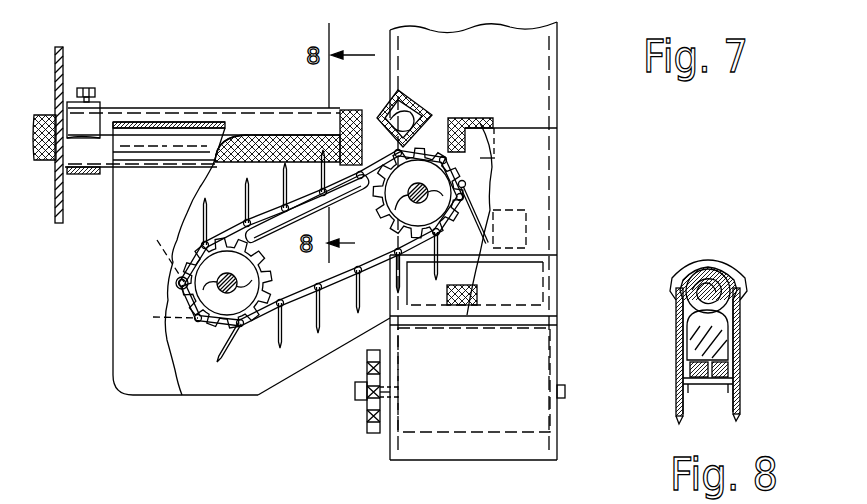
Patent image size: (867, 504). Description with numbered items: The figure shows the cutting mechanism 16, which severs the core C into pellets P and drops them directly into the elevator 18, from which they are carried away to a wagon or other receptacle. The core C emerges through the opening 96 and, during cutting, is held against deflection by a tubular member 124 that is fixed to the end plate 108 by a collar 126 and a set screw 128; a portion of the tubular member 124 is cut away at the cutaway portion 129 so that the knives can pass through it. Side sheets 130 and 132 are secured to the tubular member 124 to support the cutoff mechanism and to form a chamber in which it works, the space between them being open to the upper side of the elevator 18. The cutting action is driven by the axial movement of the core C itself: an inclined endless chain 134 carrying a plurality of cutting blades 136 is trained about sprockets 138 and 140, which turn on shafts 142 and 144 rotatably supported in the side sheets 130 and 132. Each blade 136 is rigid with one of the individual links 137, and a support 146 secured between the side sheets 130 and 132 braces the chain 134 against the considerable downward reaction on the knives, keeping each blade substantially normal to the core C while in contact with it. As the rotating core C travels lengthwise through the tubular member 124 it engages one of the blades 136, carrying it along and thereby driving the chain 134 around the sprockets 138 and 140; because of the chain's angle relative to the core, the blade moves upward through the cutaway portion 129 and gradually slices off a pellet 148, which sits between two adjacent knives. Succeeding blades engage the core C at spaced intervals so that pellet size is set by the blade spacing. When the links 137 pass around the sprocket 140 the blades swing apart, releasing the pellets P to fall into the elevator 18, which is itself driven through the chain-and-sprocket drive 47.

In FIG. 7, the end plate 108 is at (64, 68).
In FIG. 7, the opening 96 is at (50, 163).
In FIG. 7, the tubular member 124 is at (143, 106).
In FIG. 8, the tubular member 124 is at (698, 262).
In FIG. 7, the set screw 128 is at (114, 82).
In FIG. 7, the collar 126 is at (92, 175).
In FIG. 7, the cutting mechanism 16 is at (210, 80).
In FIG. 7, the side sheet 130 is at (120, 308).
In FIG. 8, the side sheet 130 is at (676, 392).
In FIG. 7, the side sheet 132 is at (242, 383).
In FIG. 8, the side sheet 132 is at (740, 349).
In FIG. 7, the cutaway portion 129 is at (260, 143).
In FIG. 7, the core C is at (345, 107).
In FIG. 8, the core C is at (718, 272).
In FIG. 7, the pellets P is at (424, 108).
In FIG. 7, the pellet 148 is at (463, 120).
In FIG. 7, the elevator 18 is at (562, 91).
In FIG. 7, the shaft 142 is at (270, 256).
In FIG. 7, the sprocket 140 is at (444, 197).
In FIG. 7, the shaft 144 is at (393, 232).
In FIG. 7, the support 146 is at (318, 250).
In FIG. 8, the support 146 is at (714, 390).
In FIG. 7, the cutting blades 136 is at (276, 336).
In FIG. 8, the cutting blades 136 is at (697, 338).
In FIG. 7, the endless chain 134 is at (295, 308).
In FIG. 8, the endless chain 134 is at (728, 372).
In FIG. 7, the links 137 is at (168, 248).
In FIG. 7, the sprocket 138 is at (178, 288).
In FIG. 7, the chain-and-sprocket drive 47 is at (368, 426).